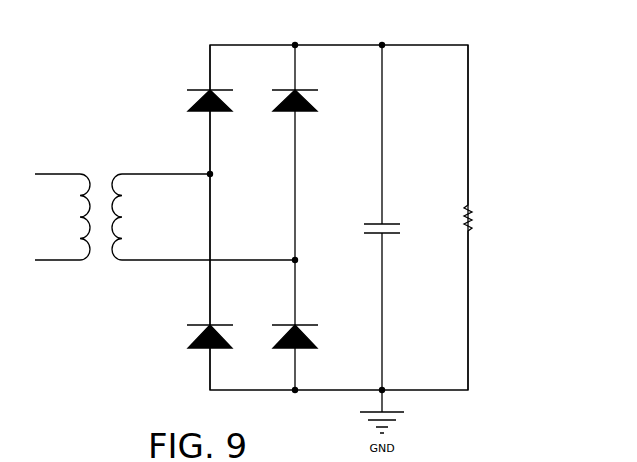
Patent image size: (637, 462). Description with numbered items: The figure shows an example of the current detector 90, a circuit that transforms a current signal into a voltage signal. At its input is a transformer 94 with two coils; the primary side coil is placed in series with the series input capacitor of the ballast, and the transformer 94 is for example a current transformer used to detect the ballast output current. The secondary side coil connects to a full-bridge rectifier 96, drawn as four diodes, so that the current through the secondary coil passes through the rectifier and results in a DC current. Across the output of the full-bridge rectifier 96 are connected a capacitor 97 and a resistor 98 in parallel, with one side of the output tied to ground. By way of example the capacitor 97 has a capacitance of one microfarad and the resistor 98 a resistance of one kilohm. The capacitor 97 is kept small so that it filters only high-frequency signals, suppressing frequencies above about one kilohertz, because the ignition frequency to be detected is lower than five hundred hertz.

The current detector 90 is at (488, 83).
The transformer 94 is at (96, 180).
The full-bridge rectifier 96 is at (176, 118).
The capacitor 97 is at (390, 222).
The resistor 98 is at (470, 210).